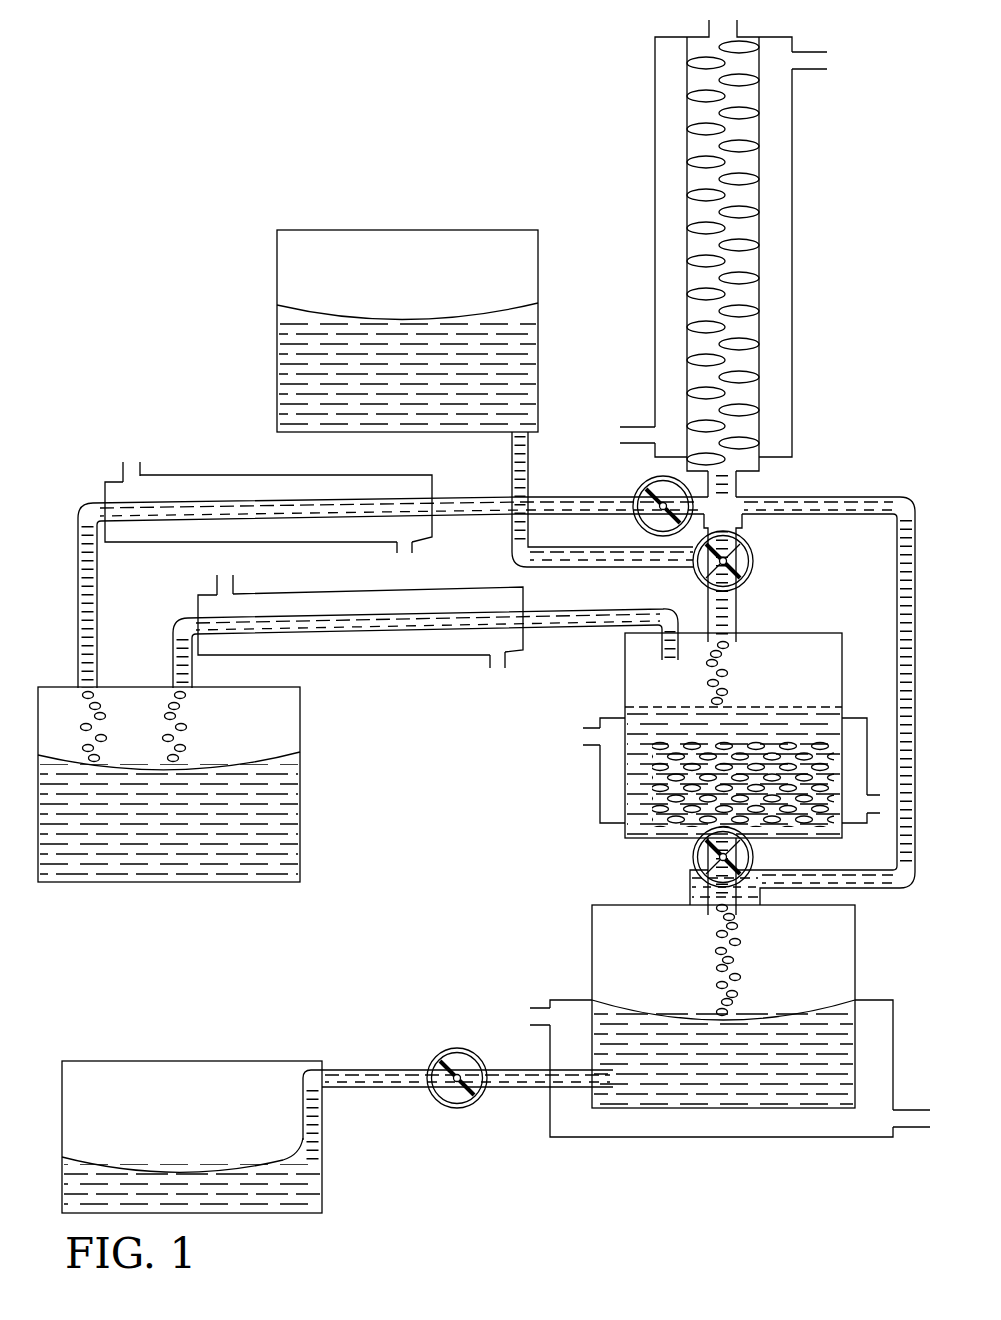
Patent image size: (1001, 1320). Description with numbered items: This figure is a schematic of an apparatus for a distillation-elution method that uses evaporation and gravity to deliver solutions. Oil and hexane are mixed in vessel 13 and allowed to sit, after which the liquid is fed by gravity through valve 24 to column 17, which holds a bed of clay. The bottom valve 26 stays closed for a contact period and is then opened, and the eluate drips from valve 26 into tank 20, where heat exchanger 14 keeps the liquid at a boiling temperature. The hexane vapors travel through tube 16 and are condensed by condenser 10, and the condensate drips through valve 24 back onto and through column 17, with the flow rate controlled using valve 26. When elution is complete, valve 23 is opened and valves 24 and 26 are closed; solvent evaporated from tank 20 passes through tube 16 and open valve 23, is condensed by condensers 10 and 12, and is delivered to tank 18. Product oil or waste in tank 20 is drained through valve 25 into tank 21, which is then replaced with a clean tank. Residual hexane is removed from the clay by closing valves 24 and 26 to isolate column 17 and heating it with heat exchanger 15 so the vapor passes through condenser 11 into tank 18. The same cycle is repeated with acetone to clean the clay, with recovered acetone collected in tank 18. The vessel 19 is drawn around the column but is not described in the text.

The condenser 10 is at (792, 255).
The condenser 11 is at (390, 655).
The condenser 12 is at (205, 482).
The vessel 13 is at (460, 230).
The heat exchanger 14 is at (893, 1040).
The heat exchanger 15 is at (600, 790).
The tube 16 is at (838, 497).
The column 17 is at (660, 707).
The tank 18 is at (300, 805).
The extraction vessel 19 is at (790, 632).
The tank 20 is at (855, 965).
The tank 21 is at (175, 1061).
The valve 23 is at (640, 492).
The valve 24 is at (752, 561).
The valve 25 is at (440, 1050).
The bottom valve 26 is at (692, 857).